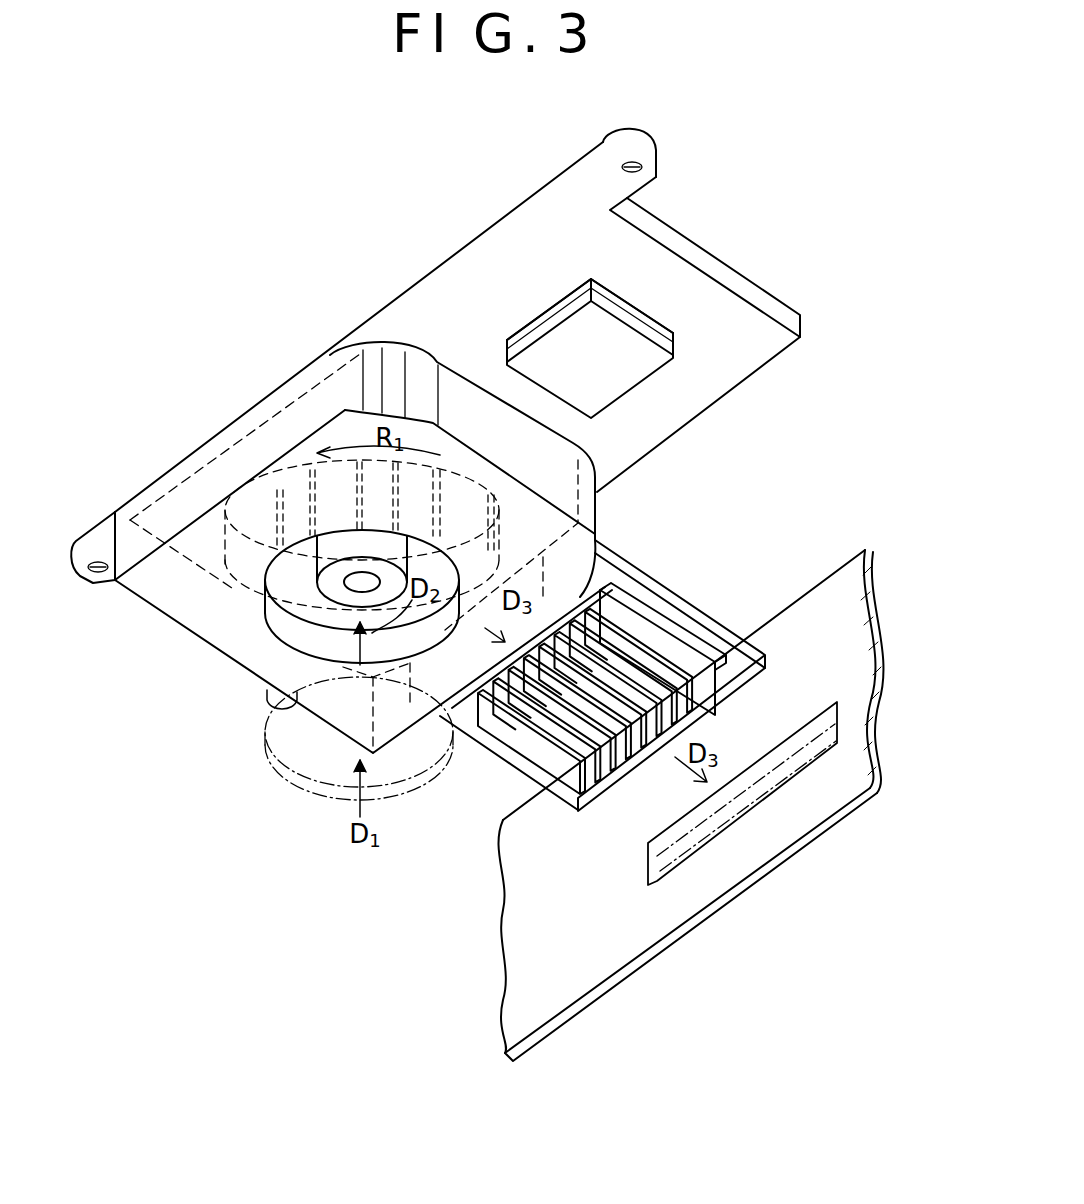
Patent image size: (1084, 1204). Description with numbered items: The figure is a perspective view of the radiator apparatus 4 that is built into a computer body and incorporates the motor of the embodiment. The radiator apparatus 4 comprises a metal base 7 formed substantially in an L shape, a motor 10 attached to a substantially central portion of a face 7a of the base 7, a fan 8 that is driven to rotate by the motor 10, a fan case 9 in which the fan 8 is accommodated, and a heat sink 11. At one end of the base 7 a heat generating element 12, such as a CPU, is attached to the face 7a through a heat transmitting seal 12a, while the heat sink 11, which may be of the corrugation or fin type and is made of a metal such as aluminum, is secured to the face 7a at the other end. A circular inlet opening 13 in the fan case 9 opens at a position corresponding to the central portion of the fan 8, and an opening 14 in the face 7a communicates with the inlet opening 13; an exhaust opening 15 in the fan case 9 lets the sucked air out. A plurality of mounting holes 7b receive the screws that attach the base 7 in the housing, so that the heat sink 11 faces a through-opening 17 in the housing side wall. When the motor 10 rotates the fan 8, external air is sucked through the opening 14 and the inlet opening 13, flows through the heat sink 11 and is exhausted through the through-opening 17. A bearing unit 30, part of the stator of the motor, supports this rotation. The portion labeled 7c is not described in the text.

The radiator apparatus 4 is at (215, 405).
The base 7 is at (803, 332).
The face 7a is at (535, 228).
The mounting holes 7b is at (625, 172).
The heat sink base portion 7c is at (733, 667).
The fan 8 is at (318, 541).
The fan case 9 is at (172, 505).
The motor 10 is at (268, 632).
The heat sink 11 is at (667, 613).
The heat generating element 12 is at (622, 372).
The heat transmitting seal 12a is at (673, 320).
The inlet opening 13 is at (313, 608).
The opening 14 is at (333, 787).
The exhaust opening 15 is at (437, 683).
The through-opening 17 is at (836, 728).
The bearing unit 30 is at (300, 590).